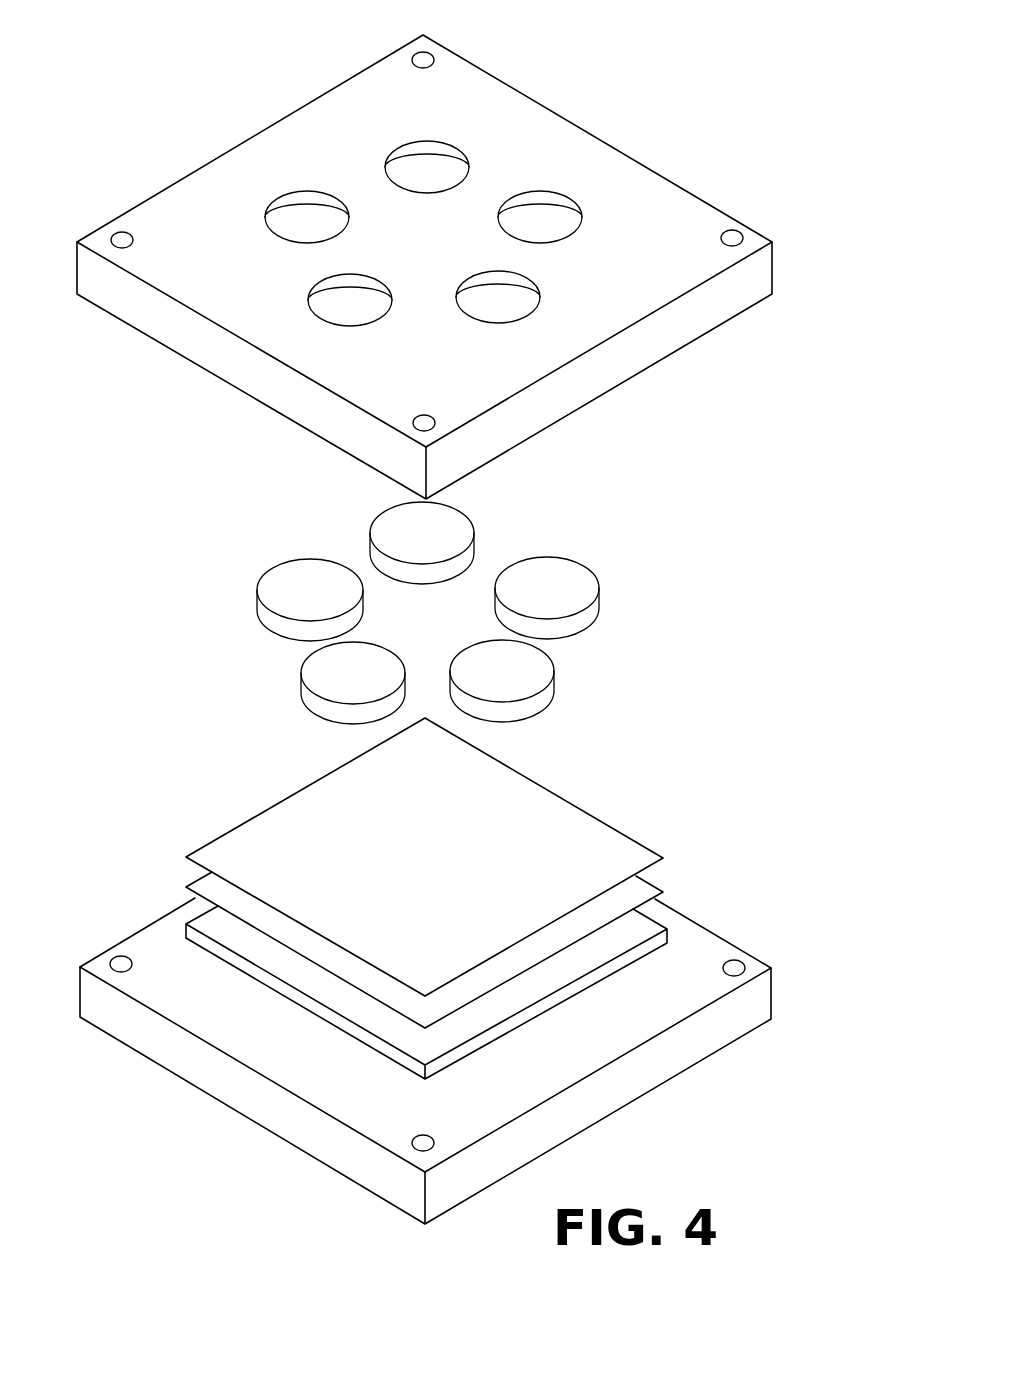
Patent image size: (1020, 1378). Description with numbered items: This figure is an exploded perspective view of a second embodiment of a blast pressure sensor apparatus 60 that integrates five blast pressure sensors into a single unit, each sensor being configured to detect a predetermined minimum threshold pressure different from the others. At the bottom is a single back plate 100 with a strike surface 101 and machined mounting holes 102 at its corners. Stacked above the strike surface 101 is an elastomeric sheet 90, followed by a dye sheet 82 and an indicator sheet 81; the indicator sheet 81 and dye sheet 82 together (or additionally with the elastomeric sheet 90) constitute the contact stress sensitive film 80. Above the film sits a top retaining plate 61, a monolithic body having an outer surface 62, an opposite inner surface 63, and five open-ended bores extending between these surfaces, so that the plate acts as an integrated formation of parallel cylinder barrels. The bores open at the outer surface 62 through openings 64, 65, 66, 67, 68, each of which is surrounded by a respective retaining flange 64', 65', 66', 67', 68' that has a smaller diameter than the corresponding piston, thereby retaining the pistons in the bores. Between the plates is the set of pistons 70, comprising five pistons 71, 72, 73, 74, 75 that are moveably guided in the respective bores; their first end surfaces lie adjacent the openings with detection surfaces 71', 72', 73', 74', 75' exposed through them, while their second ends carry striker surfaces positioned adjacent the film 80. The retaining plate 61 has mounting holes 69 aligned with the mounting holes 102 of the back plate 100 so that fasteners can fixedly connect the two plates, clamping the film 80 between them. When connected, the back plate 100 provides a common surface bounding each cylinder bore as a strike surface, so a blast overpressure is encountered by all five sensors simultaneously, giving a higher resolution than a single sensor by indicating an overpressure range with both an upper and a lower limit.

The blast pressure sensor apparatus 60 is at (645, 131).
The top retaining plate 61 is at (198, 99).
The outer surface 62 is at (697, 266).
The inner surface 63 is at (700, 345).
The opening 64 is at (431, 165).
The retaining flange 64' is at (440, 134).
The opening 65 is at (560, 210).
The retaining flange 65' is at (545, 184).
The opening 66 is at (537, 323).
The retaining flange 66' is at (537, 297).
The opening 67 is at (356, 303).
The retaining flange 67' is at (356, 265).
The opening 68 is at (288, 211).
The retaining flange 68' is at (307, 179).
The mounting holes 69 is at (430, 55).
The set of pistons 70 is at (247, 504).
The piston 71 is at (452, 533).
The detection surface 71' is at (422, 543).
The piston 72 is at (572, 583).
The detection surface 72' is at (547, 598).
The piston 73 is at (539, 681).
The detection surface 73' is at (502, 681).
The piston 74 is at (326, 699).
The detection surface 74' is at (353, 683).
The piston 75 is at (310, 570).
The detection surface 75' is at (310, 600).
The contact stress sensitive film 80 is at (674, 828).
The indicator sheet 81 is at (222, 855).
The dye sheet 82 is at (212, 888).
The elastomeric sheet 90 is at (555, 975).
The back plate 100 is at (695, 1048).
The strike surface 101 is at (494, 1094).
The mounting holes 102 is at (118, 958).